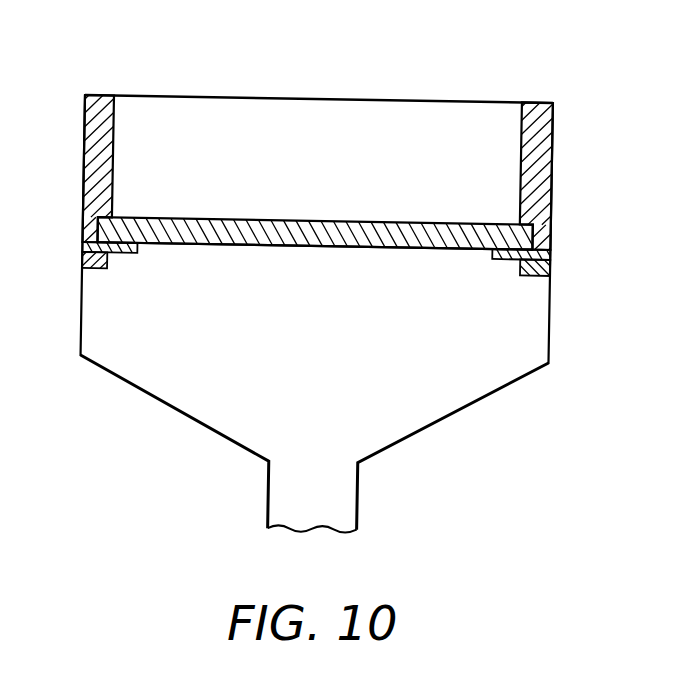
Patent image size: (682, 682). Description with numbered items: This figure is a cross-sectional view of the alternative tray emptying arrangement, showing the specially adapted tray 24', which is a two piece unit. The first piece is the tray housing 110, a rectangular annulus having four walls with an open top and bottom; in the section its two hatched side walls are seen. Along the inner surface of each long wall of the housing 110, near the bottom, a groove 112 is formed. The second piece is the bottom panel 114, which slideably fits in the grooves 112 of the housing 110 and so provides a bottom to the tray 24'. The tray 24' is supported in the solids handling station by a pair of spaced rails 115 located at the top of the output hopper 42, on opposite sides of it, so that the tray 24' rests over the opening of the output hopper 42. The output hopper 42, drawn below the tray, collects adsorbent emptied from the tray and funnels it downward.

The tray 24' is at (343, 73).
The tray housing 110 is at (553, 170).
The groove 112 is at (538, 237).
The bottom panel 114 is at (214, 243).
The rails 115 is at (83, 272).
The output hopper 42 is at (135, 376).